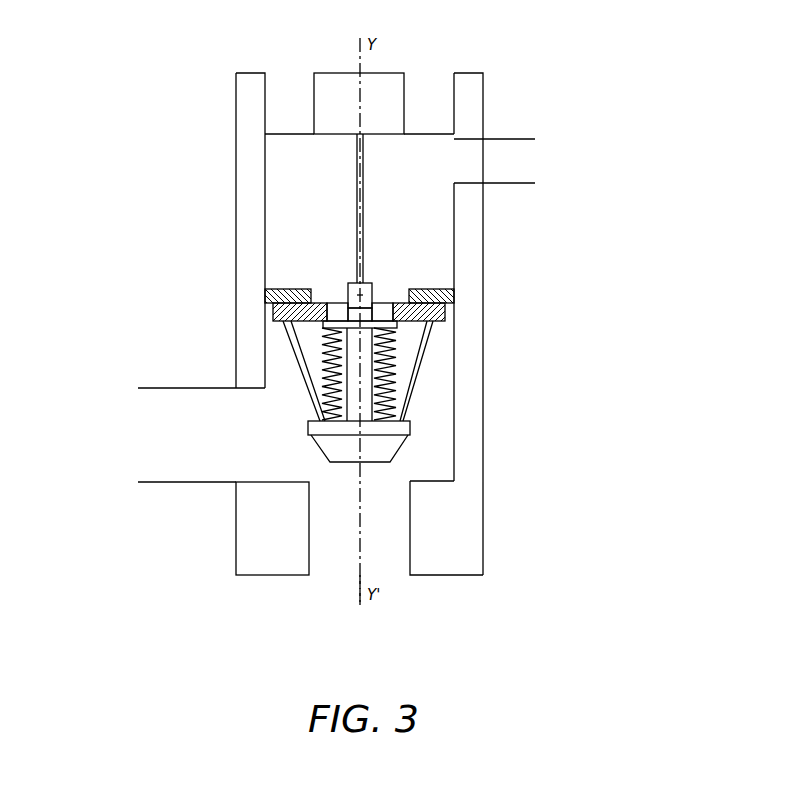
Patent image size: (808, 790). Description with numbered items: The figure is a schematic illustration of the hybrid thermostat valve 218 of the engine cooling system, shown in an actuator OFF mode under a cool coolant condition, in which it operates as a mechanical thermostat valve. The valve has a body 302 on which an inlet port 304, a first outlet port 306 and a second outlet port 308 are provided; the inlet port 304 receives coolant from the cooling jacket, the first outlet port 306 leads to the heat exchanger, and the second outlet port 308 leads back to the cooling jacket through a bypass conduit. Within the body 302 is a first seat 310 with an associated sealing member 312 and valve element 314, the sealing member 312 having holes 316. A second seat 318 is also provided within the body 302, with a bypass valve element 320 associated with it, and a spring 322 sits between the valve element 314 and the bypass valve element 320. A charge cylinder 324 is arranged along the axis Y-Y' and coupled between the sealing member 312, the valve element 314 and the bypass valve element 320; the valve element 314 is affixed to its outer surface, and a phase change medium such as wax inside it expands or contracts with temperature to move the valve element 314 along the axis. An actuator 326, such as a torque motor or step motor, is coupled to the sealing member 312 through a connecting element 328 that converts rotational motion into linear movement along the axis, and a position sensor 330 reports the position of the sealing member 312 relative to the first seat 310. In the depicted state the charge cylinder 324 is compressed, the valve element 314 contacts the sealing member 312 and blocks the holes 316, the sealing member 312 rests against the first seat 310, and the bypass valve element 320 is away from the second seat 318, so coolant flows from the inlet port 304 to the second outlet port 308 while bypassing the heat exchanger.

The hybrid thermostat valve 218 is at (704, 66).
The body 302 is at (483, 371).
The inlet port 304 is at (160, 482).
The first outlet port 306 is at (492, 160).
The second outlet port 308 is at (338, 563).
The first seat 310 is at (447, 305).
The sealing member 312 is at (273, 308).
The valve element 314 is at (393, 325).
The holes 316 is at (335, 303).
The second seat 318 is at (309, 527).
The bypass valve element 320 is at (385, 443).
The spring 322 is at (395, 390).
The charge cylinder 324 is at (367, 348).
The actuator 326 is at (385, 83).
The connecting element 328 is at (362, 158).
The position sensor 330 is at (349, 283).